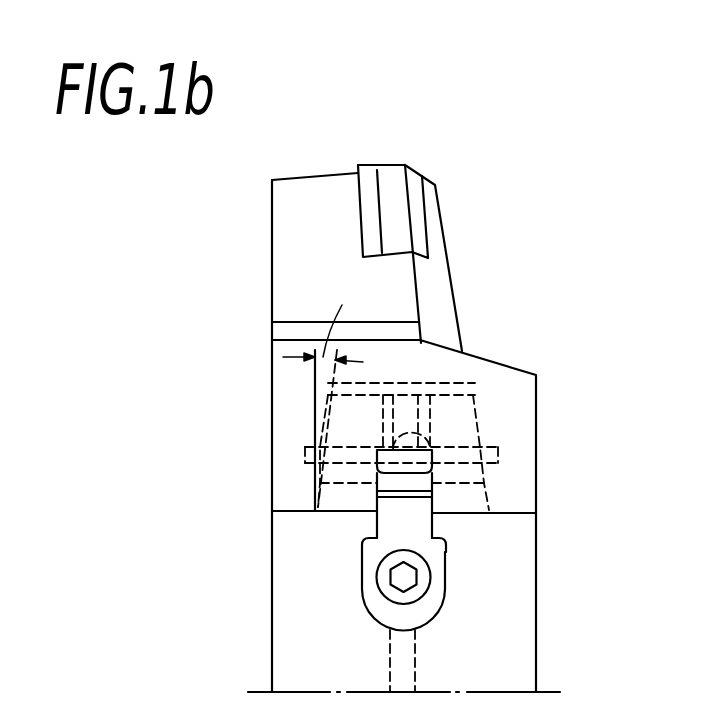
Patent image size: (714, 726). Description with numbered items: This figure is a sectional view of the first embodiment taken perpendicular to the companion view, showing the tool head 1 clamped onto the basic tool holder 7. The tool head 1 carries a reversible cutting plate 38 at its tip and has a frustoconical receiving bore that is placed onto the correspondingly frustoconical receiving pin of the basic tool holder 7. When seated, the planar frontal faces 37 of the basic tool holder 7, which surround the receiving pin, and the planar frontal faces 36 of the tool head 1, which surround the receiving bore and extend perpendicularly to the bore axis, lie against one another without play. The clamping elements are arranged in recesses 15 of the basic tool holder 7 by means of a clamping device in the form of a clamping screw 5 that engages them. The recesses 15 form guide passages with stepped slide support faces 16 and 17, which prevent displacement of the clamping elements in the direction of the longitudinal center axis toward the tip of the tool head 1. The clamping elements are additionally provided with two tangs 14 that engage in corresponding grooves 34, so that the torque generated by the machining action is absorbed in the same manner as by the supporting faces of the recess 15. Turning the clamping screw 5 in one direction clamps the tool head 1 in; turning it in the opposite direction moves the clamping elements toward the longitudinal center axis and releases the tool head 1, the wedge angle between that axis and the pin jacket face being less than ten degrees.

The tool head 1 is at (495, 377).
The clamping screw 5 is at (388, 588).
The basic tool holder 7 is at (522, 632).
The tangs 14 is at (420, 522).
The recesses 15 is at (440, 598).
The stepped slide support face 16 is at (368, 535).
The stepped slide support face 17 is at (440, 533).
The grooves 34 is at (377, 524).
The planar frontal faces 36 is at (513, 512).
The planar frontal faces 37 is at (278, 512).
The reversible cutting plate 38 is at (388, 187).